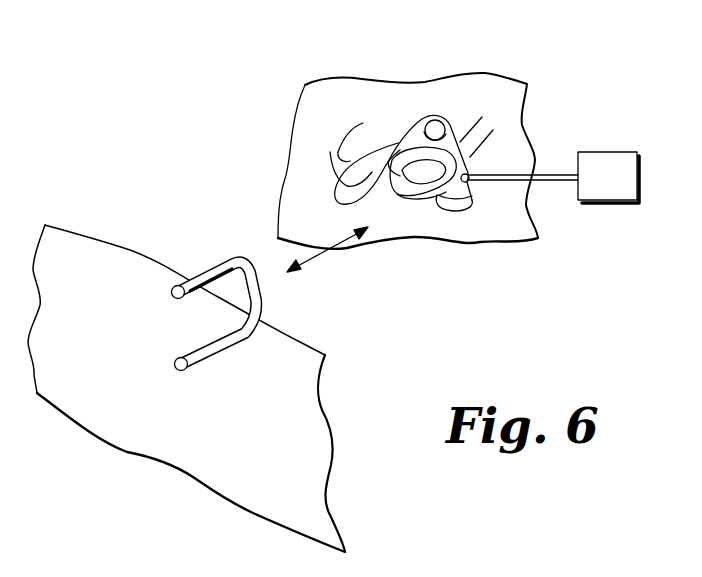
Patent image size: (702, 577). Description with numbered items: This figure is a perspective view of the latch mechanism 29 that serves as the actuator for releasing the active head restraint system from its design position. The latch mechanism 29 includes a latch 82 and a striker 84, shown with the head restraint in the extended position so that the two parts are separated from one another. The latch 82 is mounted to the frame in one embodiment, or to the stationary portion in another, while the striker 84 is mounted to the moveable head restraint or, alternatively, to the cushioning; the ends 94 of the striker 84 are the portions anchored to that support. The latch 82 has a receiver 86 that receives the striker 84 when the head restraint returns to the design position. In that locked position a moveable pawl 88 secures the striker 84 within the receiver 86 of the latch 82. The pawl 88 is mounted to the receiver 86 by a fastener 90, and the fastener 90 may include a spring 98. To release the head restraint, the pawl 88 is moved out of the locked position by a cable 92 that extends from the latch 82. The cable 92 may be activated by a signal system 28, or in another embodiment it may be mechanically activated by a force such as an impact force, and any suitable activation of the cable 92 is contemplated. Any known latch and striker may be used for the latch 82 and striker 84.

The signal system 28 is at (608, 177).
The latch mechanism 29 is at (420, 330).
The latch 82 is at (305, 172).
The striker 84 is at (240, 347).
The receiver 86 is at (347, 162).
The moveable pawl 88 is at (458, 196).
The fastener 90 is at (434, 116).
The cable 92 is at (549, 173).
The loop ends 94 is at (175, 362).
The spring 98 is at (449, 123).